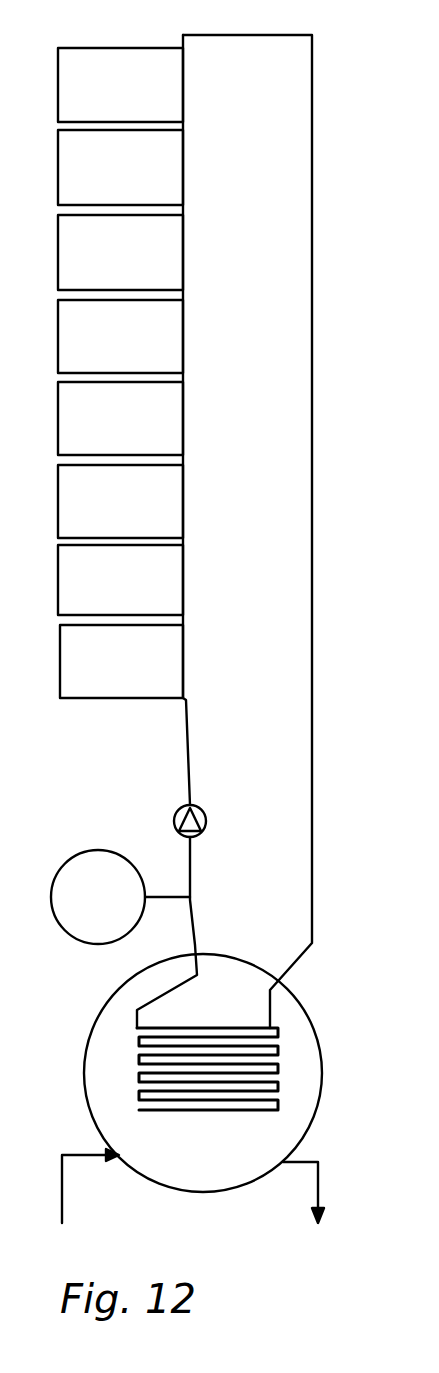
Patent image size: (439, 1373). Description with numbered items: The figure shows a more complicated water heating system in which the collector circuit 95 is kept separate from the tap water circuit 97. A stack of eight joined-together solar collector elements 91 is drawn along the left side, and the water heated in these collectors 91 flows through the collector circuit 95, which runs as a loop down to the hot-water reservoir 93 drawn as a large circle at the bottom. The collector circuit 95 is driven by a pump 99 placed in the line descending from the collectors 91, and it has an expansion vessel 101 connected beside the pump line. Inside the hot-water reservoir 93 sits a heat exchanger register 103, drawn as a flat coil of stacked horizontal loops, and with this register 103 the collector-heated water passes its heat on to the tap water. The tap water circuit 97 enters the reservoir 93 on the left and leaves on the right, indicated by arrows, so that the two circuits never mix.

The solar collector elements 91 is at (192, 487).
The hot-water reservoir 93 is at (90, 1041).
The collector circuit 95 is at (311, 690).
The tap water circuit 97 is at (311, 1194).
The pump 99 is at (207, 820).
The expansion vessel 101 is at (112, 850).
The heat exchanger register 103 is at (210, 1113).